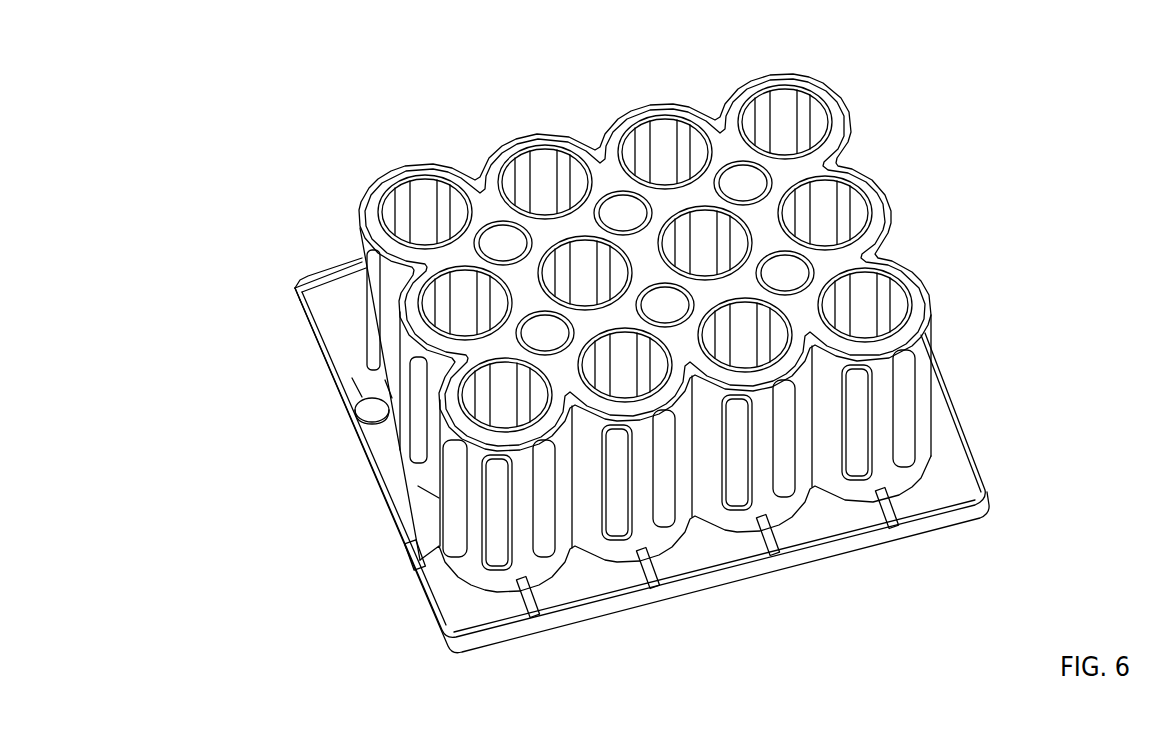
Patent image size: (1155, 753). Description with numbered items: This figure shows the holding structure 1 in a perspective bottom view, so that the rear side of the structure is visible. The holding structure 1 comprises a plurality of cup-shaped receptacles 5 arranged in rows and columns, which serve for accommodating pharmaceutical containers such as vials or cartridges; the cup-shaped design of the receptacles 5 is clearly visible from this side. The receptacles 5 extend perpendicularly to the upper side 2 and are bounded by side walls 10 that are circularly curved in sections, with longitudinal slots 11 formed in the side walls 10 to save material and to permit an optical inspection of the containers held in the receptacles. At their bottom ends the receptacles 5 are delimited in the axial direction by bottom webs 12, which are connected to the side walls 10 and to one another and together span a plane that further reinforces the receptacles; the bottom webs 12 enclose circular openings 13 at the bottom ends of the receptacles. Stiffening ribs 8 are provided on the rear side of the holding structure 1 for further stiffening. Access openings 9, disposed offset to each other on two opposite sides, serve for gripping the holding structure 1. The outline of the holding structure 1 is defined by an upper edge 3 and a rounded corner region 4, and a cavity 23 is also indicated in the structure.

The holding structure 1 is at (60, 90).
The upper side 2 is at (955, 483).
The upper edge 3 is at (337, 272).
The rounded corner region 4 is at (295, 280).
The receptacle 5 is at (858, 298).
The stiffening rib 8 is at (413, 557).
The access opening 9 is at (368, 412).
The side wall 10 is at (478, 550).
The slot 11 is at (500, 550).
The bottom web 12 is at (425, 164).
The opening 13 is at (425, 212).
The cavity 23 is at (620, 213).